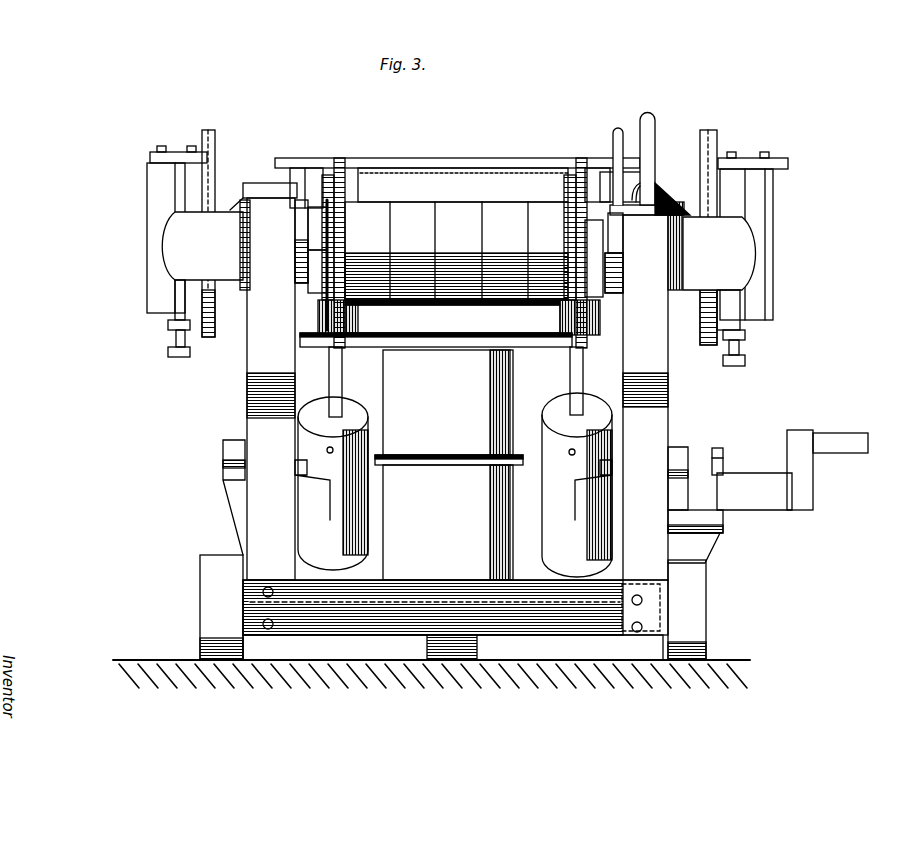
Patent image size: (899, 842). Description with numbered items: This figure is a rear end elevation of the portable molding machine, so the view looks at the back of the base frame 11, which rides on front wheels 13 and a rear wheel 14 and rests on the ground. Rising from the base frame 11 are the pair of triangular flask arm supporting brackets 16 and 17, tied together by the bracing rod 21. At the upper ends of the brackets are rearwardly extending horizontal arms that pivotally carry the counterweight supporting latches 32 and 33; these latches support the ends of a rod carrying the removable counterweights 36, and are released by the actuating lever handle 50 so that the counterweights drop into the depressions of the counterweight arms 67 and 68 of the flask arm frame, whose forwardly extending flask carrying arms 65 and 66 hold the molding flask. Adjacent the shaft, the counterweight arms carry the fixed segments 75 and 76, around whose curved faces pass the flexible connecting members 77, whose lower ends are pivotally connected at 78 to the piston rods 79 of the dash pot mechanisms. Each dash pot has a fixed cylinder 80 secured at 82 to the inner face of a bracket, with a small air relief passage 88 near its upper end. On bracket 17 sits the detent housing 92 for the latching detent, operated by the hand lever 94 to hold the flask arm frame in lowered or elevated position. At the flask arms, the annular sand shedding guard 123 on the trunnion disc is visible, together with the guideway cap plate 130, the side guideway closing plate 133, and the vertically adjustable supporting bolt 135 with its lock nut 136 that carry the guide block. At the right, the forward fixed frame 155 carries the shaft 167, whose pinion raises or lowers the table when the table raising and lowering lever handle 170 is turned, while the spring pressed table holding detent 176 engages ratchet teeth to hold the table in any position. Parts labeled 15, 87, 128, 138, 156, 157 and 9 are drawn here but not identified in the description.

The base frame 11 is at (345, 634).
The front wheels 13 is at (215, 578).
The rear wheel 14 is at (480, 651).
The right foot 15 is at (690, 612).
The flask arm supporting bracket 16 is at (253, 505).
The flask arm supporting bracket 17 is at (670, 400).
The bracing rod 21 is at (460, 347).
The counterweight supporting latch 32 is at (300, 268).
The counterweight supporting latch 33 is at (616, 237).
The removable counterweights 36 is at (500, 210).
The actuating lever handle 50 is at (613, 137).
The flask carrying arm 65 is at (180, 258).
The flask carrying arm 66 is at (740, 270).
The counterweight arm 67 is at (596, 272).
The counterweight arm 68 is at (318, 280).
The segment 75 is at (452, 316).
The segment 76 is at (333, 168).
The flexible connecting member 77 is at (348, 186).
The pivotal connection 78 is at (332, 345).
The piston rod 79 is at (343, 385).
The dash pot cylinder 80 is at (370, 508).
The cylinder securing point 82 is at (453, 407).
The link 87 is at (338, 500).
The air relief passage 88 is at (330, 455).
The detent housing 92 is at (690, 170).
The operating hand lever 94 is at (655, 120).
The annular sand shedding guard 123 is at (212, 340).
The right threaded rod 128 is at (712, 135).
The guideway cap plate 130 is at (160, 160).
The side guideway closing plate 133 is at (148, 207).
The supporting bolt 135 is at (168, 355).
The lock nut 136 is at (168, 326).
The right plate 138 is at (775, 247).
The forward fixed frame 155 is at (222, 482).
The center block 156 is at (448, 402).
The lower center block 157 is at (448, 522).
The shaft 167 is at (725, 528).
The table raising and lowering lever handle 170 is at (755, 497).
The table holding detent 176 is at (800, 482).
The pin 9 is at (335, 457).